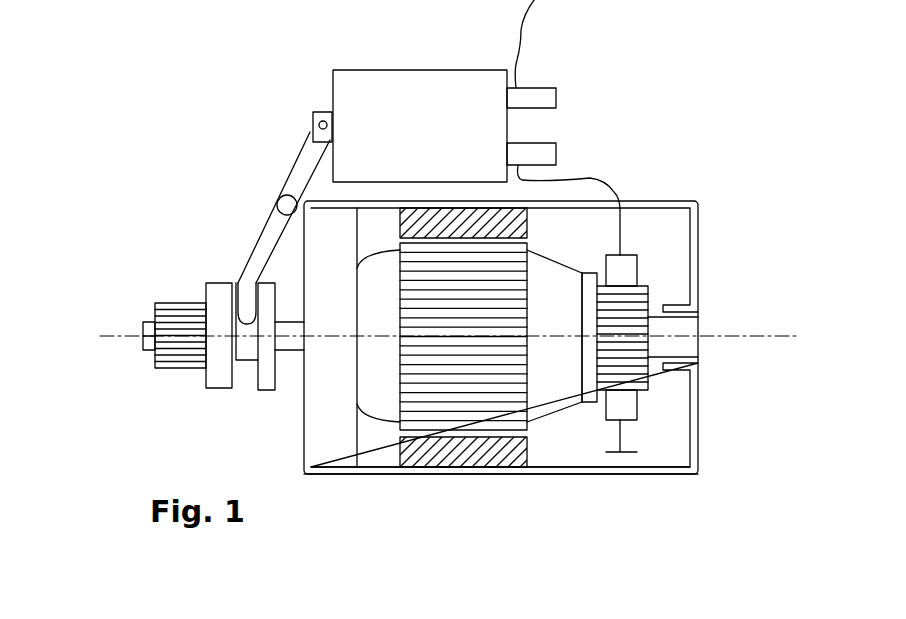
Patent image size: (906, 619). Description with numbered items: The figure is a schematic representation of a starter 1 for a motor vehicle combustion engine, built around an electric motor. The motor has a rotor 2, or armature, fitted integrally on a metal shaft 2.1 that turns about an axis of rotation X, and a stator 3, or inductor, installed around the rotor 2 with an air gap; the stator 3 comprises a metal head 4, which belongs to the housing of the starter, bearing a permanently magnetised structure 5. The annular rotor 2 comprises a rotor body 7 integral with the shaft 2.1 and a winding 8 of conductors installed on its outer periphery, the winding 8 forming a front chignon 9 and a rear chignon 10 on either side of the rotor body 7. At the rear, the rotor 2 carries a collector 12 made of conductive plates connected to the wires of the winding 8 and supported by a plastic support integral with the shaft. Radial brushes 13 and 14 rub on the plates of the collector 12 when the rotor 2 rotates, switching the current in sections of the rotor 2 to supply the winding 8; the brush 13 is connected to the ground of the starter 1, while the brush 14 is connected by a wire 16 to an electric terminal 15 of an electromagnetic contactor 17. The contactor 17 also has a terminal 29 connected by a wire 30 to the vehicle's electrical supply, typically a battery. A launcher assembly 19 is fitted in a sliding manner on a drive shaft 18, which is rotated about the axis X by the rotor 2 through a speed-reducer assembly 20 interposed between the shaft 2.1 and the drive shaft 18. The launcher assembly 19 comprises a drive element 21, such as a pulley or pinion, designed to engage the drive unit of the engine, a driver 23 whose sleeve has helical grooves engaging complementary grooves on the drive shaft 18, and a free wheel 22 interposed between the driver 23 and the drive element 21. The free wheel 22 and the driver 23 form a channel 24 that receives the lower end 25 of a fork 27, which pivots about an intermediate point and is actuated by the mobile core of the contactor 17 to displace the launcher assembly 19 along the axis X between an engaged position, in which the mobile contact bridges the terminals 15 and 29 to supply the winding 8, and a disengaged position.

The starter 1 is at (663, 497).
The rotor 2 is at (537, 410).
The shaft 2.1 is at (683, 326).
The stator 3 is at (443, 471).
The head 4 is at (490, 474).
The magnetised structure 5 is at (525, 218).
The rotor body 7 is at (413, 412).
The winding 8 is at (573, 395).
The front chignon 9 is at (383, 410).
The rear chignon 10 is at (555, 400).
The collector 12 is at (650, 305).
The brush 13 is at (630, 408).
The brush 14 is at (632, 268).
The electric terminal 15 is at (557, 155).
The wire 16 is at (605, 182).
The contactor 17 is at (419, 90).
The drive shaft 18 is at (147, 322).
The launcher assembly 19 is at (213, 400).
The speed-reducer assembly 20 is at (333, 438).
The drive element 21 is at (183, 303).
The free wheel 22 is at (217, 288).
The driver 23 is at (265, 391).
The channel 24 is at (252, 365).
The lower end 25 is at (240, 273).
The fork 27 is at (300, 163).
The terminal 29 is at (557, 97).
The wire 30 is at (517, 46).
The axis of rotation X is at (771, 343).